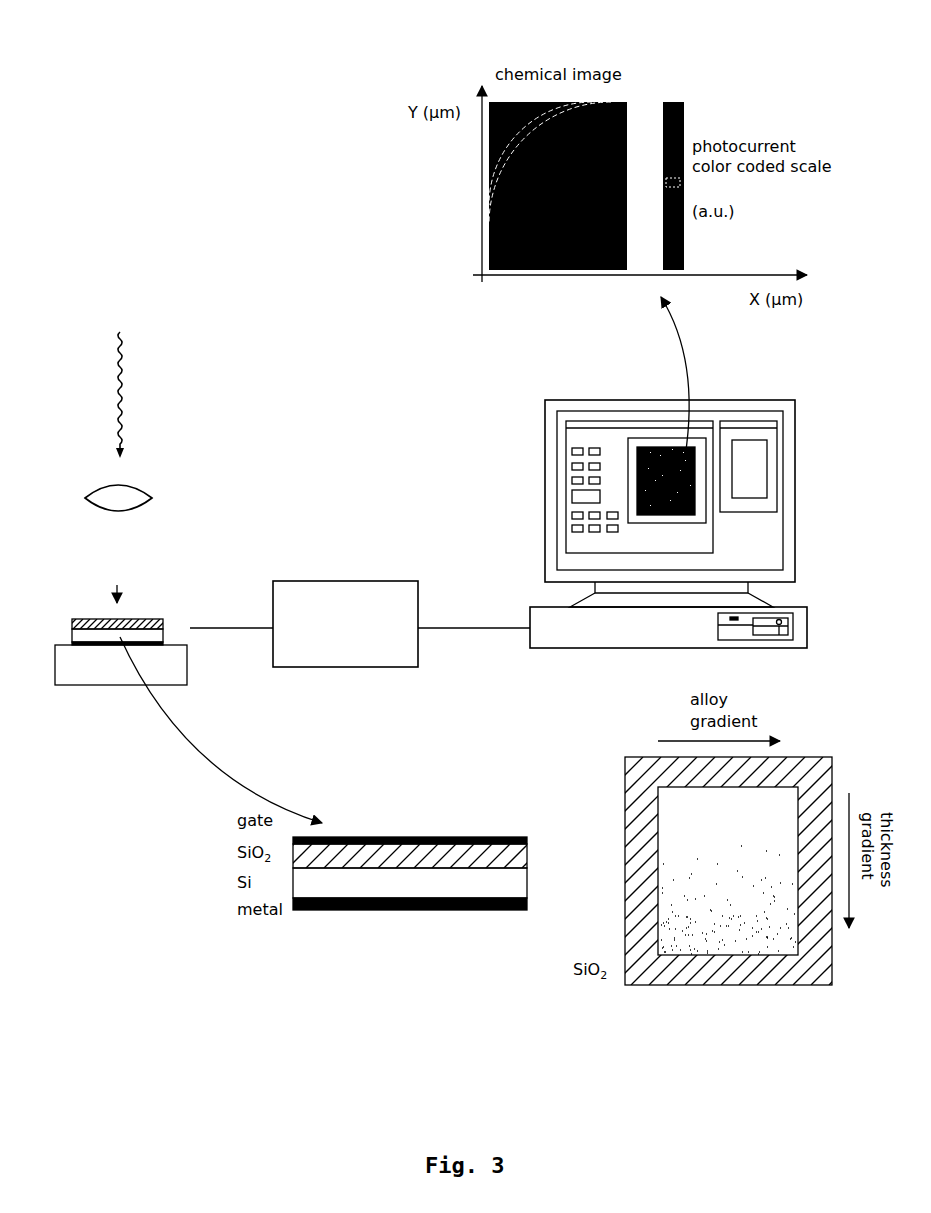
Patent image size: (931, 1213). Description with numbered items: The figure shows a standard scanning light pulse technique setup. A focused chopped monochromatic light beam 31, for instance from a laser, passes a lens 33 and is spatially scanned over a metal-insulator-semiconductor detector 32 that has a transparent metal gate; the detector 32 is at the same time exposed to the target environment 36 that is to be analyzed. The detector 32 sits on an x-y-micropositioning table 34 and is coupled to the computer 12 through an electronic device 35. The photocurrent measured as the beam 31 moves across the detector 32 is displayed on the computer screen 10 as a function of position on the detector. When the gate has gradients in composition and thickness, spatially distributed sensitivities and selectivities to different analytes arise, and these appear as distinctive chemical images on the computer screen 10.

The computer screen 10 is at (650, 503).
The computer 12 is at (668, 627).
The focused chopped monochromatic light beam 31 is at (149, 395).
The metal-insulator-semiconductor detector 32 is at (103, 630).
The lens 33 is at (92, 498).
The x-y-micropositioning table 34 is at (121, 665).
The electronic device 35 is at (360, 624).
The target environment 36 is at (118, 573).